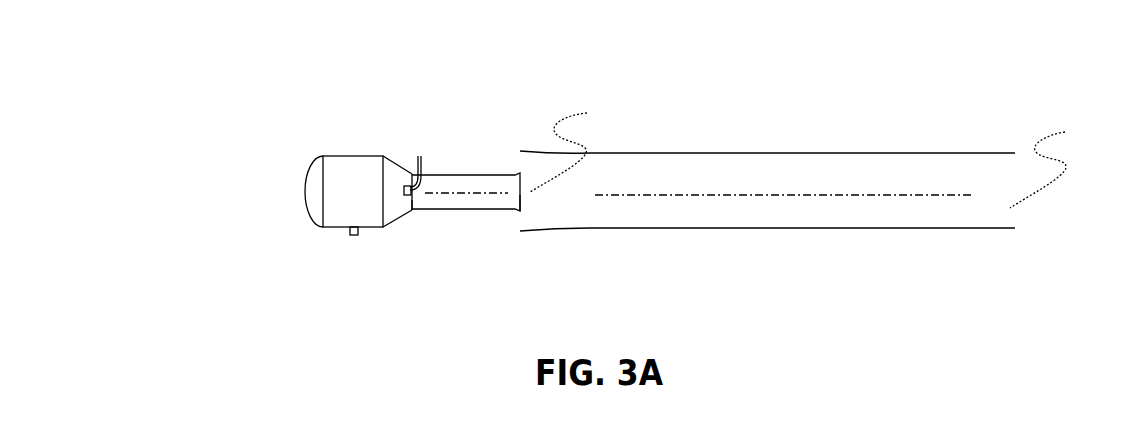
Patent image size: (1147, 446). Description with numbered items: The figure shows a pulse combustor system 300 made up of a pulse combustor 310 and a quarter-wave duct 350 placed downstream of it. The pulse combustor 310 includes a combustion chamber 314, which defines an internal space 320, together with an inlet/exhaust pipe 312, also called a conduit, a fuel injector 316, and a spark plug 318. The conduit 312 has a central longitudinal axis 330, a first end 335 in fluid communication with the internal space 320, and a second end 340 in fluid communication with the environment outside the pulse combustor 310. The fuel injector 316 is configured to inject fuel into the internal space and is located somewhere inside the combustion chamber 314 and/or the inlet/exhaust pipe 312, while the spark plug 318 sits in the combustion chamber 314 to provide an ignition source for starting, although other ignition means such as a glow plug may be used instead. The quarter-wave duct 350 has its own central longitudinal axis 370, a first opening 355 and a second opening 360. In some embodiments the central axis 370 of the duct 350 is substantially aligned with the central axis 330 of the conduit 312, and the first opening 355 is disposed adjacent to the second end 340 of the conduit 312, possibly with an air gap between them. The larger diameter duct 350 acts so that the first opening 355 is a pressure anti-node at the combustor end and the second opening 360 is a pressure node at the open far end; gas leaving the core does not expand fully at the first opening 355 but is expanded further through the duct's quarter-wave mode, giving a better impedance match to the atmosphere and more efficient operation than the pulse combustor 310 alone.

The pulse combustor system 300 is at (243, 157).
The pulse combustor 310 is at (275, 203).
The inlet/exhaust pipe 312 is at (469, 175).
The combustion chamber 314 is at (347, 155).
The fuel injector 316 is at (415, 160).
The spark plug 318 is at (354, 235).
The internal space 320 is at (348, 202).
The central longitudinal axis 330 is at (463, 194).
The first end 335 is at (413, 209).
The second end 340 is at (518, 210).
The quarter-wave duct 350 is at (750, 153).
The first opening 355 is at (578, 148).
The second opening 360 is at (1061, 162).
The central longitudinal axis 370 is at (786, 195).